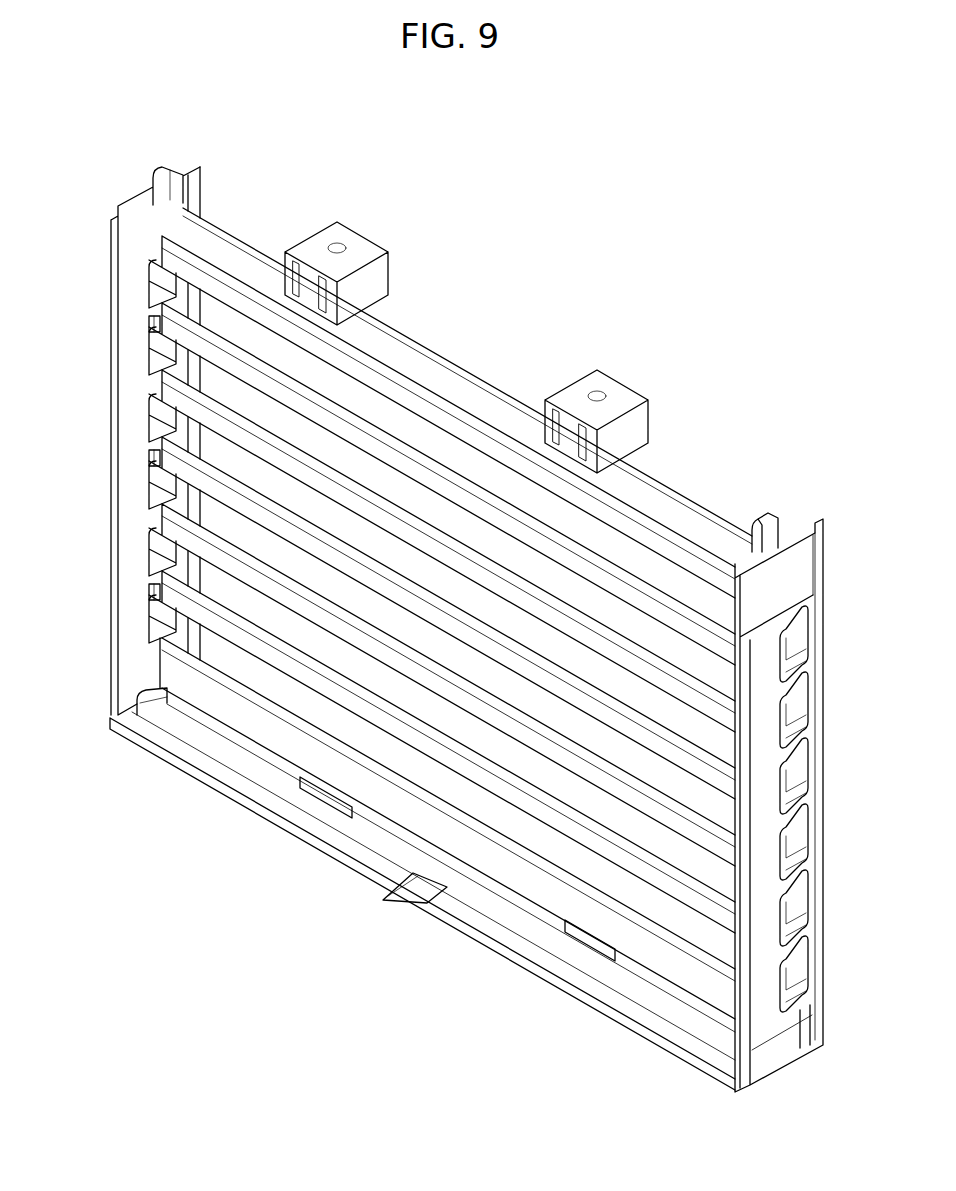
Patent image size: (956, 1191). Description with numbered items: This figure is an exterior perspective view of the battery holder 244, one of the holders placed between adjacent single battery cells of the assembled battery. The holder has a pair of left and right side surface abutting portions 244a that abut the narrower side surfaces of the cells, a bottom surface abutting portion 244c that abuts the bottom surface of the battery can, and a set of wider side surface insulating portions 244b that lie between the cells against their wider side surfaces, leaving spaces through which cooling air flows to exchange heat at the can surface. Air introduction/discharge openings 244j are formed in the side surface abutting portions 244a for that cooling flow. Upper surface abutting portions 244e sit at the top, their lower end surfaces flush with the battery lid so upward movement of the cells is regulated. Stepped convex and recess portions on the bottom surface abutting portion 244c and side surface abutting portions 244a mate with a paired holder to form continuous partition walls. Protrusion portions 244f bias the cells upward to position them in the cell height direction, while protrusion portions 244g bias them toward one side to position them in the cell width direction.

The battery holder 244 is at (601, 176).
The side surface abutting portions 244a is at (130, 487).
The wider side surface insulating portions 244b is at (470, 705).
The bottom surface abutting portion 244c is at (462, 905).
The upper surface abutting portions 244e is at (373, 287).
The protrusion portions 244f is at (322, 805).
The protrusion portions 244g is at (150, 332).
The air introduction/discharge openings 244j is at (806, 1005).